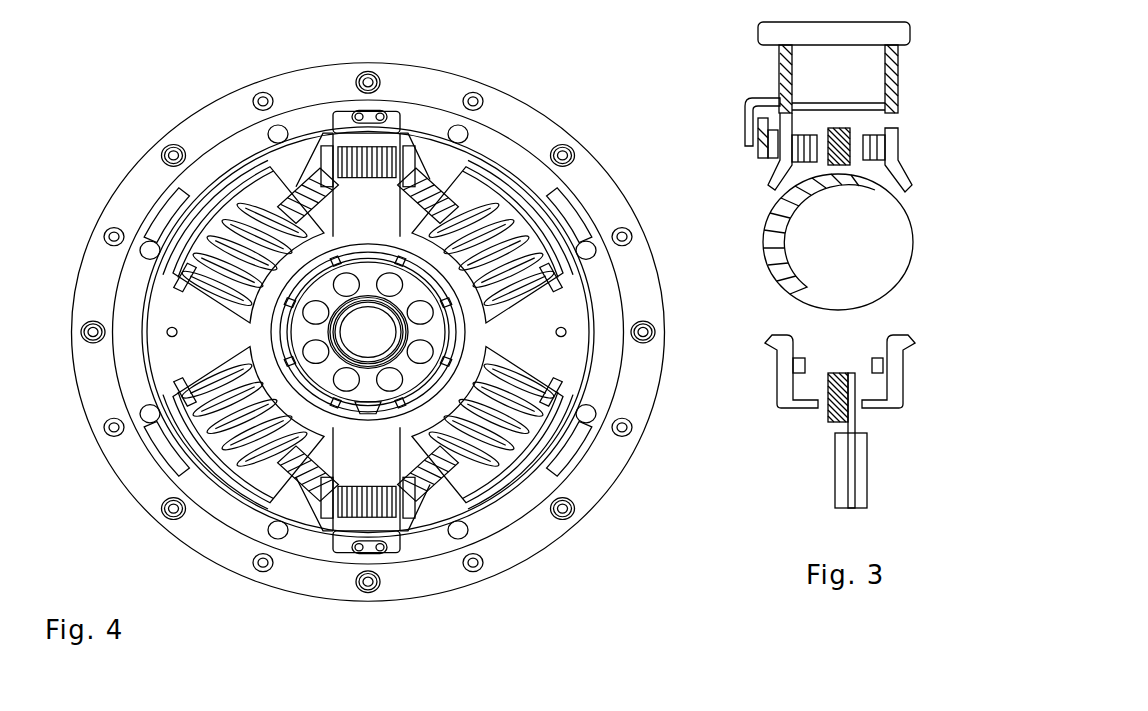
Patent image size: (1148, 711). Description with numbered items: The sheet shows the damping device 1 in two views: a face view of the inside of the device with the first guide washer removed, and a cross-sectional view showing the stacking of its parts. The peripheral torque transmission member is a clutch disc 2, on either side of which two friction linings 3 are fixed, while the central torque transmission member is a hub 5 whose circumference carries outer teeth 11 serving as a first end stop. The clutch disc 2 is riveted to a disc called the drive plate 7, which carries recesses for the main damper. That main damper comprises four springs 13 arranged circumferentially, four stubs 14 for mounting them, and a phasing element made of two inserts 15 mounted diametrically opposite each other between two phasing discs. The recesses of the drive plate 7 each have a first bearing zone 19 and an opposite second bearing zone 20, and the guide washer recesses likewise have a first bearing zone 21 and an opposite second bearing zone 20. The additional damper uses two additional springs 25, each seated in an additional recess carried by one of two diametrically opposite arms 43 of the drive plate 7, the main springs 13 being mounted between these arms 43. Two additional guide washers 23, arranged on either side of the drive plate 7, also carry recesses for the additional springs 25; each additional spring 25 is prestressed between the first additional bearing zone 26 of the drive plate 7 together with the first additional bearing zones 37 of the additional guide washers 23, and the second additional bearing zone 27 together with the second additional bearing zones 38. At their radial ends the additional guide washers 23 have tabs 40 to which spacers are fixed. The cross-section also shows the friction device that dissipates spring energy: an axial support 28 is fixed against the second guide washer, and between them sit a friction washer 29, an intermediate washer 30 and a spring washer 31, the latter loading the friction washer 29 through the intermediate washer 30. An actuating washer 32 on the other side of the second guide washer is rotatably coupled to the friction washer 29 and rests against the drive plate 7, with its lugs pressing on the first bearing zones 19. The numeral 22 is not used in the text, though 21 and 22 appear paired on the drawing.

In FIG. 4, the damping device 1 is at (139, 106).
In FIG. 4, the clutch disc 2 is at (130, 382).
In FIG. 4, the friction linings 3 is at (647, 400).
In FIG. 4, the hub 5 is at (368, 282).
In FIG. 4, the drive plate 7 is at (472, 160).
In FIG. 4, the outer teeth 11 is at (365, 413).
In FIG. 4, the springs 13 is at (226, 205).
In FIG. 3, the springs 13 is at (893, 263).
In FIG. 4, the stubs 14 is at (263, 173).
In FIG. 4, the inserts 15 is at (175, 297).
In FIG. 4, the first bearing zone 19 is at (368, 318).
In FIG. 4, the second bearing zone 20 is at (422, 376).
In FIG. 4, the first bearing zone 21 is at (298, 178).
In FIG. 4, the energy storage element 22 is at (472, 163).
In FIG. 4, the additional guide washers 23 is at (414, 165).
In FIG. 4, the additional springs 25 is at (350, 145).
In FIG. 4, the first additional bearing zone 26 is at (313, 239).
In FIG. 4, the second additional bearing zone 27 is at (330, 191).
In FIG. 3, the axial support 28 is at (753, 108).
In FIG. 3, the friction washer 29 is at (773, 170).
In FIG. 3, the intermediate washer 30 is at (767, 167).
In FIG. 3, the spring washer 31 is at (758, 153).
In FIG. 3, the actuating washer 32 is at (825, 130).
In FIG. 4, the first additional bearing zone 37 is at (352, 447).
In FIG. 4, the second additional bearing zone 38 is at (389, 403).
In FIG. 4, the tabs 40 is at (393, 153).
In FIG. 4, the arms 43 is at (465, 131).